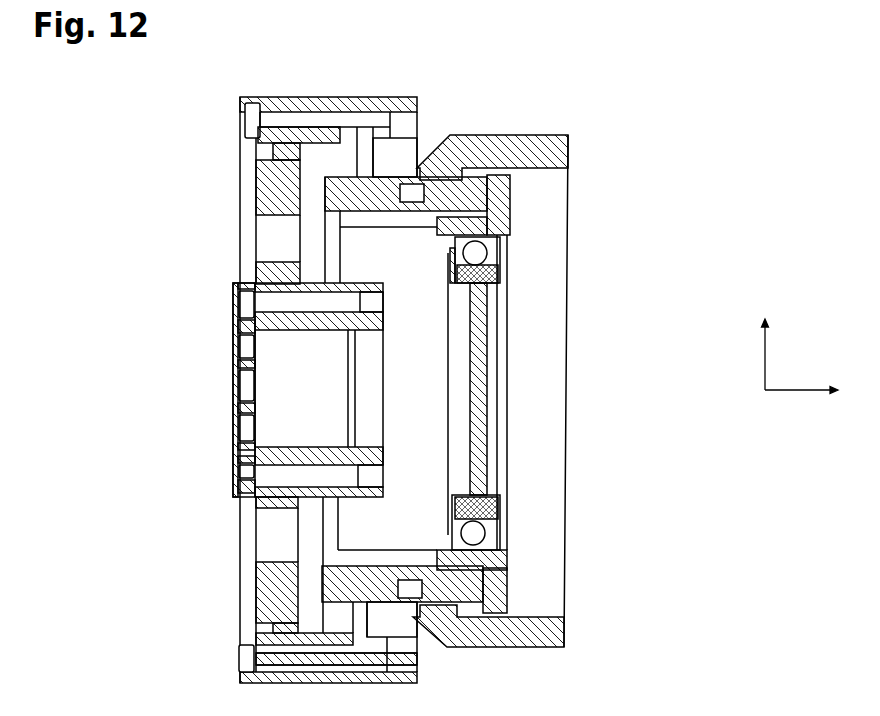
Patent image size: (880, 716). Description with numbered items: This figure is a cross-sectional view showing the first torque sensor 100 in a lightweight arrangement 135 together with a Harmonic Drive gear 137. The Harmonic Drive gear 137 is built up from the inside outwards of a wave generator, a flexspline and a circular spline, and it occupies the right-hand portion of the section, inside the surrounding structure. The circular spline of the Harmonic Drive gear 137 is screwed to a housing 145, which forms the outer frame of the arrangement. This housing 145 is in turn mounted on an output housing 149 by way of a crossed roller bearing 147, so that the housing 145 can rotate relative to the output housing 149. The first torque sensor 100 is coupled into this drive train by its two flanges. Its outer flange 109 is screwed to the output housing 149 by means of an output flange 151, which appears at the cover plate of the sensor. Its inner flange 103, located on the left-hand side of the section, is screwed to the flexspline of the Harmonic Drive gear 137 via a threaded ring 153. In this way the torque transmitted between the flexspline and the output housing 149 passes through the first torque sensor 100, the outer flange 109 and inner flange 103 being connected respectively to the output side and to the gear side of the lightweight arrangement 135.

The lightweight arrangement 135 is at (714, 88).
The first torque sensor 100 is at (240, 163).
The output housing 149 is at (418, 108).
The output flange 151 is at (253, 97).
The outer flange 109 is at (250, 187).
The crossed roller bearing 147 is at (419, 152).
The housing 145 is at (566, 176).
The Harmonic Drive gear 137 is at (508, 485).
The inner flange 103 is at (240, 283).
The threaded ring 153 is at (327, 332).